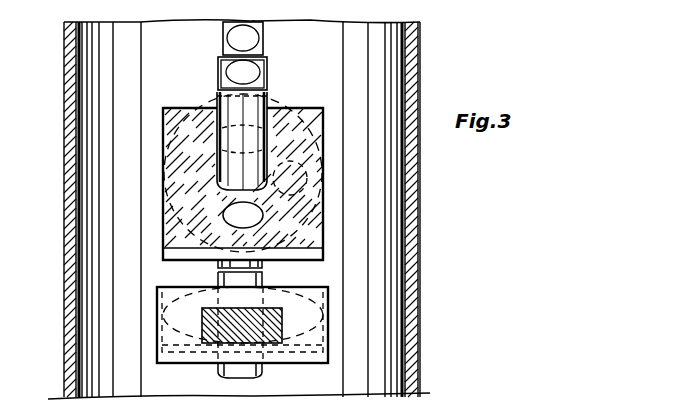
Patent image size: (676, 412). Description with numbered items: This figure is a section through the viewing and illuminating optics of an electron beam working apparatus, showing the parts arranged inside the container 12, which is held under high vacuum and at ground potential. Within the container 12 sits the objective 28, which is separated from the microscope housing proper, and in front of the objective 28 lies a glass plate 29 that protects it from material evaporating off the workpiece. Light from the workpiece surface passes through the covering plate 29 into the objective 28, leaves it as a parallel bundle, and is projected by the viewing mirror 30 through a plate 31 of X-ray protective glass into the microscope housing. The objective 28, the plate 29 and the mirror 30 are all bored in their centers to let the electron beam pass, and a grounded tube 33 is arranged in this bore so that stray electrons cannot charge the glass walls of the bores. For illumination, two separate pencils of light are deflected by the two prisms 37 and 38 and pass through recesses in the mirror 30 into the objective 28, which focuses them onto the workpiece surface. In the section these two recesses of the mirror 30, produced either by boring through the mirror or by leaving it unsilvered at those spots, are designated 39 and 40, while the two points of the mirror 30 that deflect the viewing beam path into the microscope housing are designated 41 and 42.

The container 12 is at (415, 215).
The objective 28 is at (303, 308).
The glass plate 29 is at (298, 348).
The viewing mirror 30 is at (322, 236).
The plate of X-ray protective glass 31 is at (267, 110).
The grounded tube 33 is at (275, 118).
The prism 37 is at (263, 28).
The prism 38 is at (267, 60).
The recess of the mirror 39 is at (245, 217).
The recess of the mirror 40 is at (240, 133).
The deflecting point of the mirror 41 is at (305, 174).
The deflecting point of the mirror 42 is at (172, 178).